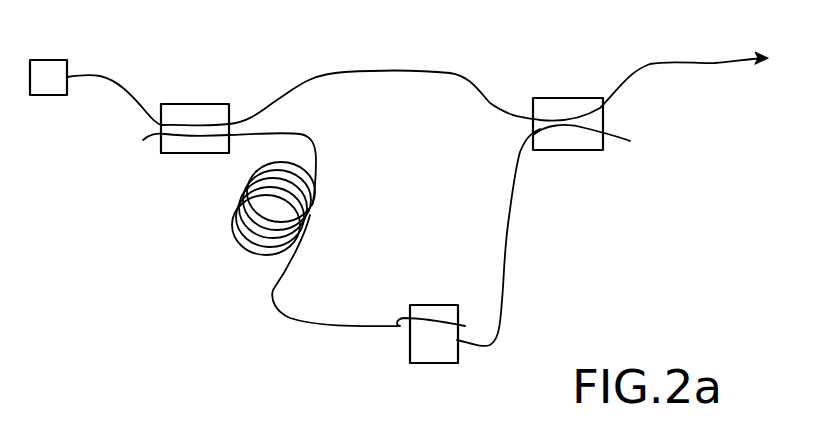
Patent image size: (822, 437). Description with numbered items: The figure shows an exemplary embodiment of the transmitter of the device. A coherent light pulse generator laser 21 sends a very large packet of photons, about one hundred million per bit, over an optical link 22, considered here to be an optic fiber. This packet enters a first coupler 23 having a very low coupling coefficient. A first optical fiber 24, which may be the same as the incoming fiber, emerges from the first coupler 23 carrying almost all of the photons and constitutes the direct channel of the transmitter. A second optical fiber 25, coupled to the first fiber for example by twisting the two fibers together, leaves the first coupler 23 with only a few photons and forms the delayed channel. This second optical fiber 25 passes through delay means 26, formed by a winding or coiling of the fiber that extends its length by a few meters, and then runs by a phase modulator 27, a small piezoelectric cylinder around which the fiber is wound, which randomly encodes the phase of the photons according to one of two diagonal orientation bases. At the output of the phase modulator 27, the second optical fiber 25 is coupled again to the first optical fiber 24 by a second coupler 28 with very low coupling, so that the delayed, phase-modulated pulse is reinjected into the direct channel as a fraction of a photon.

The coherent light pulse generator laser 21 is at (50, 60).
The optical link 22 is at (108, 75).
The first coupler 23 is at (208, 104).
The first optical fiber 24 is at (370, 71).
The second optical fiber 25 is at (295, 133).
The delay means 26 is at (232, 235).
The phase modulator 27 is at (422, 363).
The second coupler 28 is at (588, 150).